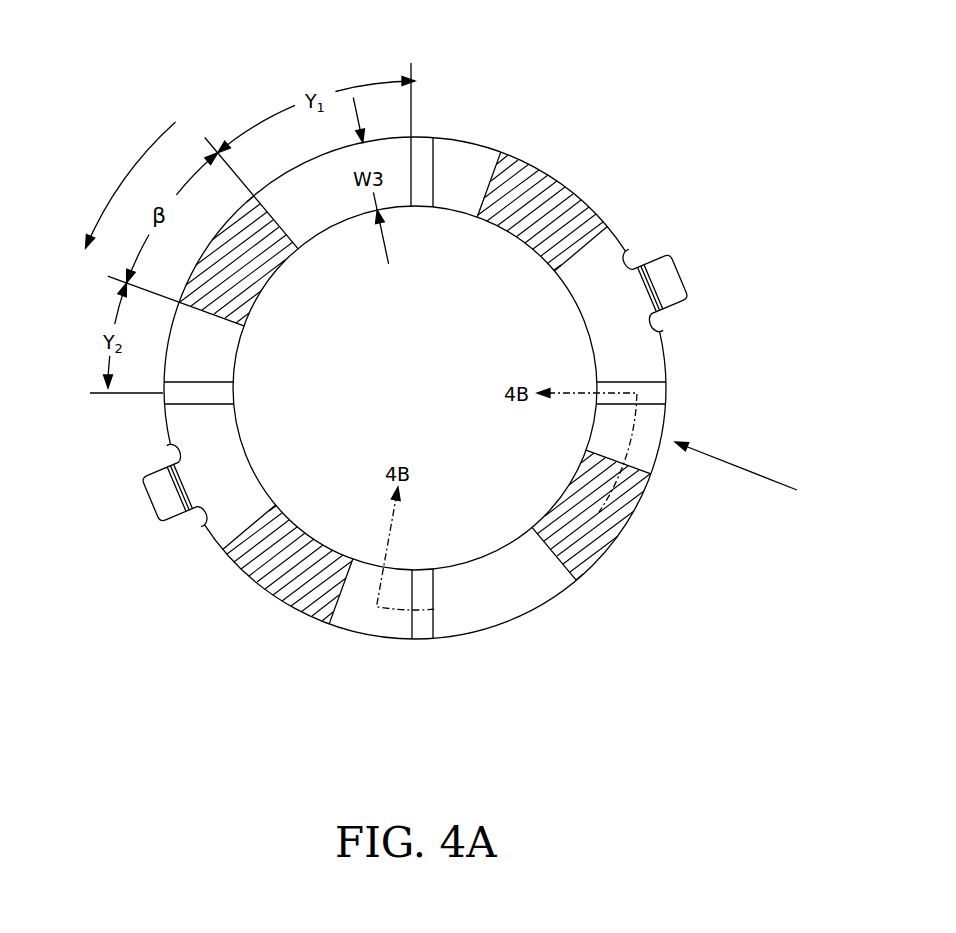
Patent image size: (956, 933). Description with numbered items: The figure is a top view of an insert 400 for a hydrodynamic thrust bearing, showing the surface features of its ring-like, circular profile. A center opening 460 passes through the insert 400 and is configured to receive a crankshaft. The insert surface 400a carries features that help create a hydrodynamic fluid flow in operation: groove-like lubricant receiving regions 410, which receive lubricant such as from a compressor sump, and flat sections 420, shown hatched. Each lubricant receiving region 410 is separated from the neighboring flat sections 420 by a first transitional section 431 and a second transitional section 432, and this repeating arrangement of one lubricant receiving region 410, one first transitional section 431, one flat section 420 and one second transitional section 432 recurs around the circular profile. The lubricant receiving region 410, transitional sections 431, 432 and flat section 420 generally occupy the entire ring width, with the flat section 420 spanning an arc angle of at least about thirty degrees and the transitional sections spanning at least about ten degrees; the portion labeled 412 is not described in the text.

The insert 400 is at (440, 342).
The insert surface 400a is at (648, 422).
The lubricant receiving region 410 is at (420, 148).
The ring portion 412 is at (127, 173).
The flat section 420 is at (562, 208).
The first transitional section 431 is at (317, 190).
The second transitional section 432 is at (458, 167).
The center opening 460 is at (433, 420).